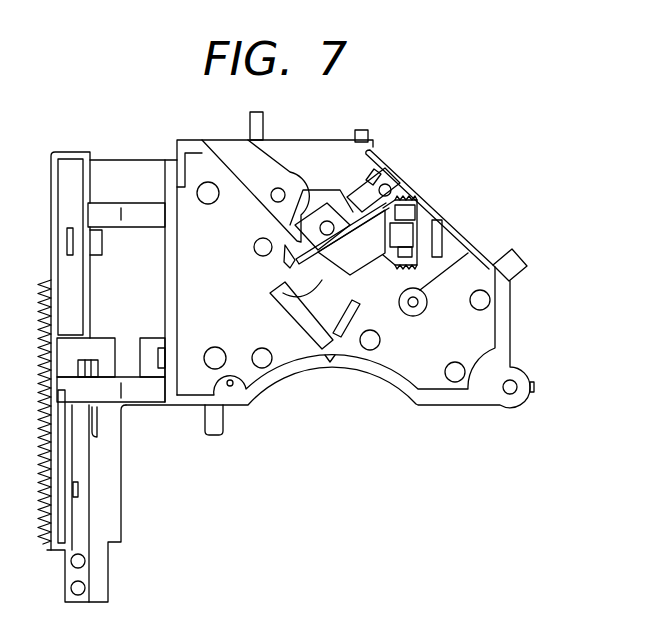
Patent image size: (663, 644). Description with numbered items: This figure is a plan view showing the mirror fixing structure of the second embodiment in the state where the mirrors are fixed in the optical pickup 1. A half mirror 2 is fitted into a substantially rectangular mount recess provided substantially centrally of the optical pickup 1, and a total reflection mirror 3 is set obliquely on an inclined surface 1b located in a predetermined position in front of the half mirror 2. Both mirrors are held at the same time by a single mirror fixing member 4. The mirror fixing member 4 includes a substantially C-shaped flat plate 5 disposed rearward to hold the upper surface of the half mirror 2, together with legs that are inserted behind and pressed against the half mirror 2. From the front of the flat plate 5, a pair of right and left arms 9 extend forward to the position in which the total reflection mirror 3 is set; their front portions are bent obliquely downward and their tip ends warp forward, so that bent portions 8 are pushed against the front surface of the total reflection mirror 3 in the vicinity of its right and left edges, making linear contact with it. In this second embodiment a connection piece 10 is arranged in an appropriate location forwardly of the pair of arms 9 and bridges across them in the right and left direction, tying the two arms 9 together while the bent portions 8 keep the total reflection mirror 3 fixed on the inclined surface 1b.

The optical pickup 1 is at (487, 243).
The inclined surface 1b is at (357, 303).
The half mirror 2 is at (400, 238).
The total reflection mirror 3 is at (302, 313).
The mirror fixing member 4 is at (406, 185).
The flat plate 5 is at (418, 228).
The bent portions 8 is at (280, 284).
The arms 9 is at (352, 215).
The connection piece 10 is at (277, 300).